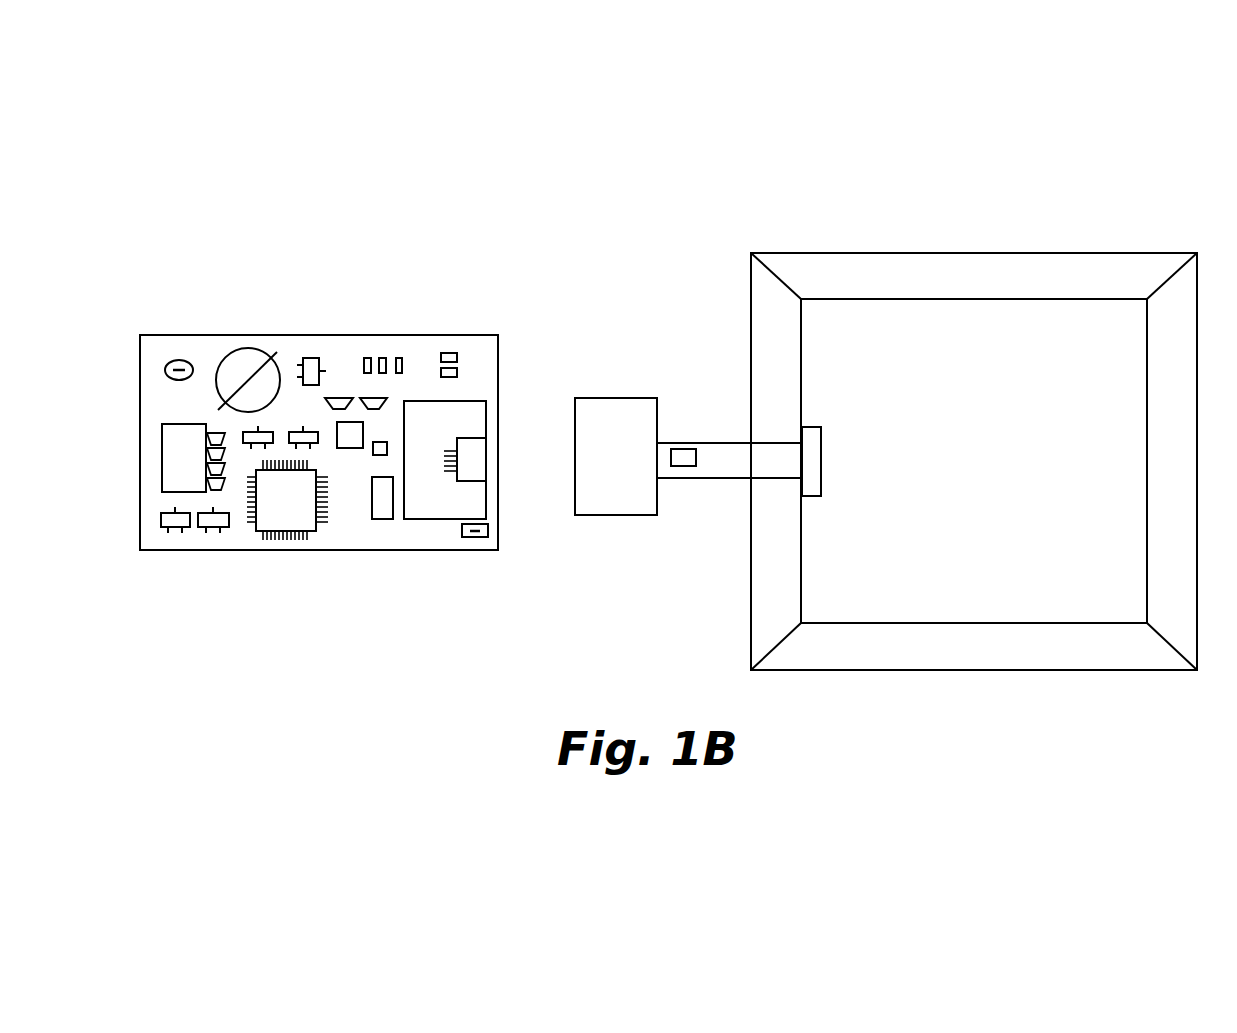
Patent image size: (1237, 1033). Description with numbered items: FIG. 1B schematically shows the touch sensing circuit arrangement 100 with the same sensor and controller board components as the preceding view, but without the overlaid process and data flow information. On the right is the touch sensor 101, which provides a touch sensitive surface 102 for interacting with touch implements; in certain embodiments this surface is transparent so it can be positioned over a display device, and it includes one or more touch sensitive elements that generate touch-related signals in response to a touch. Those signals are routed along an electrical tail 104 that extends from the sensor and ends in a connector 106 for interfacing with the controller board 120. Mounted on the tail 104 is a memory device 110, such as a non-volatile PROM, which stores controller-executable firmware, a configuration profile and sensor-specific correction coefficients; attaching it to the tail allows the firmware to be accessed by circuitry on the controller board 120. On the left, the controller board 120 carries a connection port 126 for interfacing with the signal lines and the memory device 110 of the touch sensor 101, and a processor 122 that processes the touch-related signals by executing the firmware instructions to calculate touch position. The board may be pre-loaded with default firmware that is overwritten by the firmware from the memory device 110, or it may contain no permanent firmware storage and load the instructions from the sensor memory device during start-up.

The touch sensing circuit arrangement 100 is at (842, 113).
The touch sensor 101 is at (970, 247).
The touch sensitive surface 102 is at (978, 609).
The electrical tail 104 is at (714, 472).
The connector 106 is at (612, 398).
The memory device 110 is at (683, 455).
The controller board 120 is at (312, 328).
The processor 122 is at (308, 519).
The connection port 126 is at (477, 500).